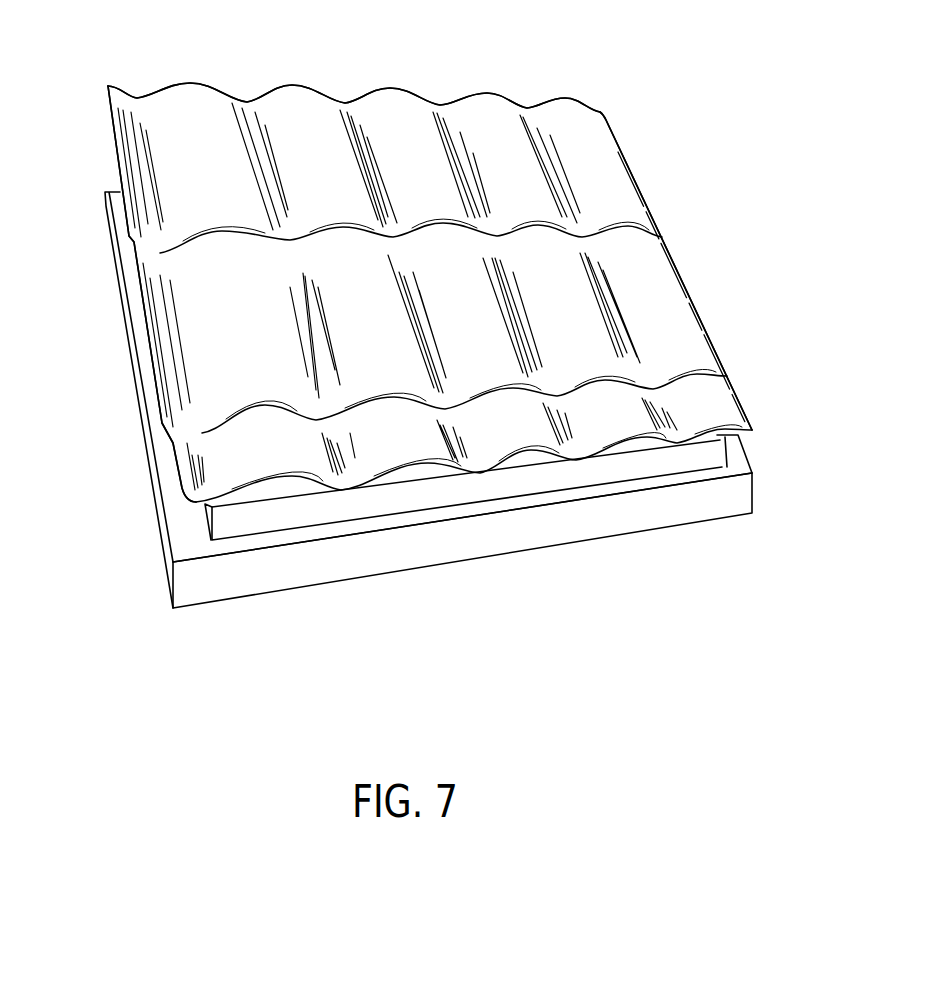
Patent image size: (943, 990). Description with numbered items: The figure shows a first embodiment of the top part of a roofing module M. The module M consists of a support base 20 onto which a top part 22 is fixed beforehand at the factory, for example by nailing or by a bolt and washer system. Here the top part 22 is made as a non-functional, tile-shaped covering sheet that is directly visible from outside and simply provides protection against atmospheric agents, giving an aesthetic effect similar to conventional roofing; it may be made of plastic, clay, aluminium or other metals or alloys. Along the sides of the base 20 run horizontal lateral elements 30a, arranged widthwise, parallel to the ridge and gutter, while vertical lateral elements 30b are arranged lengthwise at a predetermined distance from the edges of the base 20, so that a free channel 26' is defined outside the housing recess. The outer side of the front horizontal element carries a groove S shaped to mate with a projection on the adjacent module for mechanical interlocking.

The support base 20 is at (643, 516).
The top part 22 is at (485, 113).
The roofing module M is at (625, 127).
The free channel 26' is at (422, 467).
The horizontal lateral elements 30a is at (323, 594).
The vertical lateral elements 30b is at (206, 504).
The groove S is at (455, 508).